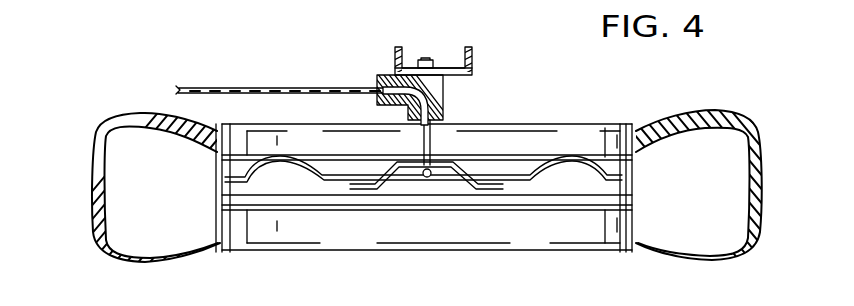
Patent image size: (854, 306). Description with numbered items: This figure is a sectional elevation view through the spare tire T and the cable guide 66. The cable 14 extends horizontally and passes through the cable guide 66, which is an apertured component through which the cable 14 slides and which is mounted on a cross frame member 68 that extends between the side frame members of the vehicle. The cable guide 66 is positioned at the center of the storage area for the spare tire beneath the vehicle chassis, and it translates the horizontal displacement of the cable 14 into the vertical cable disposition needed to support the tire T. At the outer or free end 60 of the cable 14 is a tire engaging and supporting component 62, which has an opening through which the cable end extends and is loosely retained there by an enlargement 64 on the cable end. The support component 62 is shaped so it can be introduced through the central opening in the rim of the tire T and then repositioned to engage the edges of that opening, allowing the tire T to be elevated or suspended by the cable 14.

The tire T is at (723, 103).
The cable 14 is at (230, 87).
The outer or free end 60 is at (443, 138).
The tire engaging and supporting component 62 is at (470, 185).
The enlargement 64 is at (423, 180).
The cable guide 66 is at (385, 72).
The cross frame member 68 is at (470, 62).